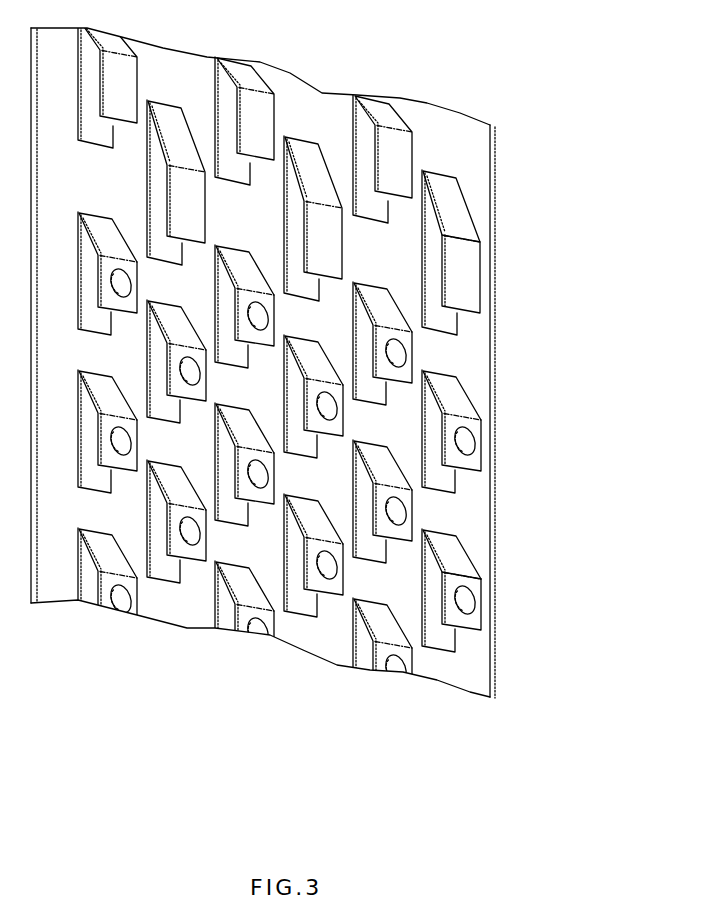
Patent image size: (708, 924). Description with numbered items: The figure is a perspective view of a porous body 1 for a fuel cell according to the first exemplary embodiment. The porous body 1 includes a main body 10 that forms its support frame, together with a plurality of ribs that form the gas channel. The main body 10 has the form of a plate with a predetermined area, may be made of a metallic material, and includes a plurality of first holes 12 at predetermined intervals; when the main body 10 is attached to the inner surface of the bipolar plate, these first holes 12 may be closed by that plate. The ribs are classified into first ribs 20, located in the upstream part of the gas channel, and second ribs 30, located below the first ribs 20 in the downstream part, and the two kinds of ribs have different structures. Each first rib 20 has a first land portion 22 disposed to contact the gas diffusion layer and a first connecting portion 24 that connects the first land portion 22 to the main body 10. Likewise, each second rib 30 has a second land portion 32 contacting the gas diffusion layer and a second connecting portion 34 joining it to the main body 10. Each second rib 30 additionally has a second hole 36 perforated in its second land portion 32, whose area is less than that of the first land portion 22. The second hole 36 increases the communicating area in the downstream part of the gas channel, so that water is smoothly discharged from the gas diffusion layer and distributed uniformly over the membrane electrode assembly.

The porous body 1 is at (334, 370).
The main body 10 is at (482, 530).
The first hole 12 is at (450, 333).
The first rib 20 is at (520, 242).
The first land portion 22 is at (470, 275).
The first connecting portion 24 is at (458, 215).
The second rib 30 is at (530, 590).
The second land portion 32 is at (473, 622).
The second connecting portion 34 is at (460, 562).
The second hole 36 is at (475, 598).